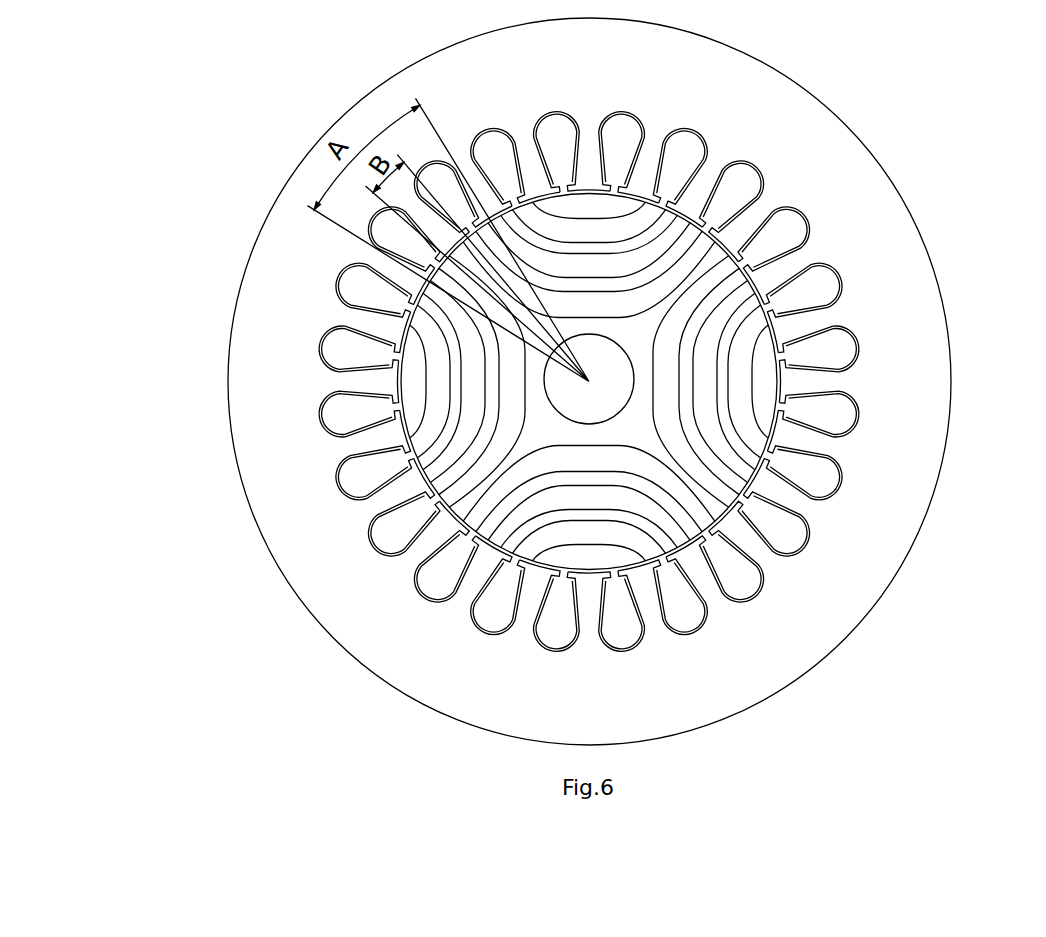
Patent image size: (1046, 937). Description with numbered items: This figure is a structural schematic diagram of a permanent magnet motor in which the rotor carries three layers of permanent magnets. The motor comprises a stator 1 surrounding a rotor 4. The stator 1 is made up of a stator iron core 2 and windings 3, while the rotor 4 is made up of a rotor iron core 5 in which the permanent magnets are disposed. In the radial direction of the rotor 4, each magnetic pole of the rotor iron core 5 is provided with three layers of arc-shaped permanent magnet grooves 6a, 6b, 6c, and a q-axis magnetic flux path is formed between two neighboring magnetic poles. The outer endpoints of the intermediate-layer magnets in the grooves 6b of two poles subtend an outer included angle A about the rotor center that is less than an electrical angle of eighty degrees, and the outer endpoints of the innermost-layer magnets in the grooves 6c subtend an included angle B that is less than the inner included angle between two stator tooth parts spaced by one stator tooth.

The stator 1 is at (420, 100).
The stator iron core 2 is at (365, 220).
The windings 3 is at (395, 230).
The rotor 4 is at (411, 382).
The rotor iron core 5 is at (452, 385).
The permanent magnet groove 6a is at (425, 435).
The permanent magnet groove 6b is at (452, 453).
The permanent magnet groove 6c is at (485, 463).